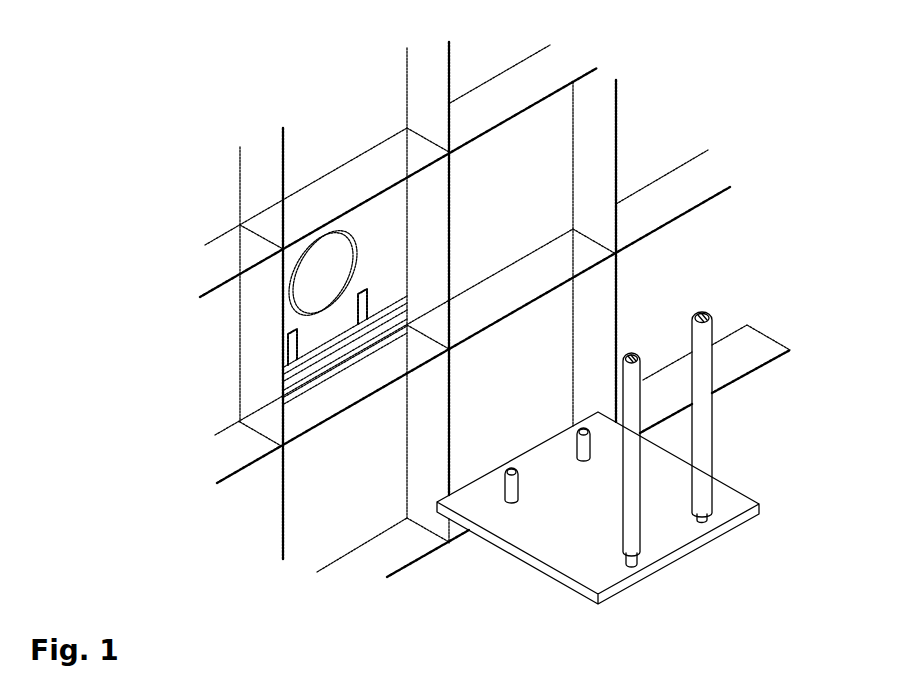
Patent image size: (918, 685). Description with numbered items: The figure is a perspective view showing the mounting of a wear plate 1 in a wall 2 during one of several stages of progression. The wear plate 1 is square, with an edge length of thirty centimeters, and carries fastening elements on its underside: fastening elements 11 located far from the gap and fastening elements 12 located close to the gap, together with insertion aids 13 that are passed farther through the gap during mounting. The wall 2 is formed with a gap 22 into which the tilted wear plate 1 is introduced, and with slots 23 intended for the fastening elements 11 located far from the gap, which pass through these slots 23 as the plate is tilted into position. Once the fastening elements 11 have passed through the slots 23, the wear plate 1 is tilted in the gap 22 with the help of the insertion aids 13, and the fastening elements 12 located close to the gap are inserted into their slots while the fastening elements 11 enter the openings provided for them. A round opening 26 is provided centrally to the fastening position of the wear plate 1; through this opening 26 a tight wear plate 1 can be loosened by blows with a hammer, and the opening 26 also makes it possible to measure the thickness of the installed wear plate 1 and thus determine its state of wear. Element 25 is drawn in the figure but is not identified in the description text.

The wear plate 1 is at (560, 567).
The wall 2 is at (540, 213).
The fastening elements located far from the gap 11 is at (584, 450).
The fastening elements located close to the gap 12 is at (707, 521).
The insertion aids 13 is at (700, 403).
The gap 22 is at (283, 371).
The slots 23 is at (289, 345).
The bracket flange 25 is at (315, 407).
The round opening 26 is at (320, 272).